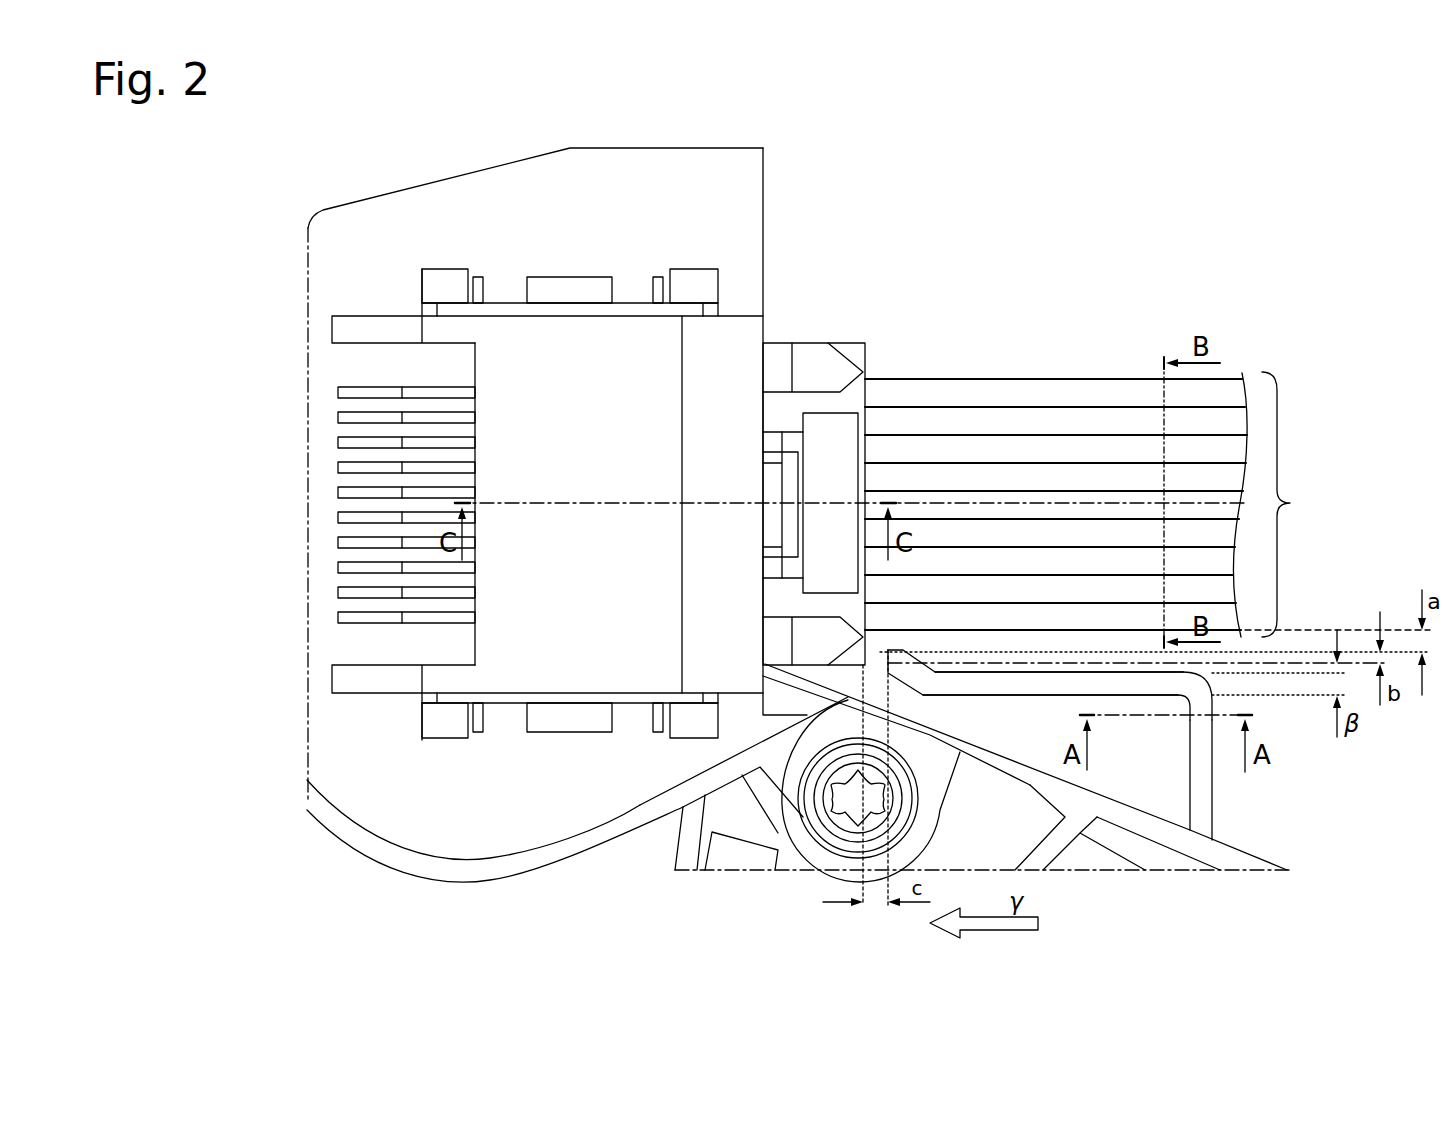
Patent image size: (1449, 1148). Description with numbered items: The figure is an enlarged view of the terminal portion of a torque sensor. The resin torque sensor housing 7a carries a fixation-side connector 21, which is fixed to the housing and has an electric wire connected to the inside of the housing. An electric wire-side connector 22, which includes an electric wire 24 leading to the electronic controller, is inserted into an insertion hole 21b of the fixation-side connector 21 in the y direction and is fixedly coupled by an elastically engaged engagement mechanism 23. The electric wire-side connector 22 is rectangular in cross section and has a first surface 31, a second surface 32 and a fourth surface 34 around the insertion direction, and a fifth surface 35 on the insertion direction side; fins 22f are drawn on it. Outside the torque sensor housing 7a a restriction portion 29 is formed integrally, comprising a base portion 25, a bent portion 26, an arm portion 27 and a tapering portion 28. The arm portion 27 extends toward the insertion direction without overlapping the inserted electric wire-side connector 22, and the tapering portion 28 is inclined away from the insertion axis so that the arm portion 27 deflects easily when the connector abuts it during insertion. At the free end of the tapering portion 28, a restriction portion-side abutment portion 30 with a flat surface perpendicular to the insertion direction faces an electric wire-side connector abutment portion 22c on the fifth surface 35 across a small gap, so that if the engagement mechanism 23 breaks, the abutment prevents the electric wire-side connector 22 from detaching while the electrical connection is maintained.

The fixation-side connector 21 is at (710, 323).
The insertion hole 21b is at (767, 355).
The electric wire-side connector 22 is at (818, 530).
The electric wire-side connector abutment portion 22c is at (870, 646).
The heat radiating fins 22f is at (424, 447).
The engagement mechanism 23 is at (795, 464).
The electric wire 24 is at (1097, 504).
The base portion 25 is at (1202, 772).
The bent portion 26 is at (1205, 697).
The arm portion 27 is at (1008, 688).
The tapering portion 28 is at (910, 648).
The restriction portion 29 is at (1044, 706).
The restriction portion-side abutment portion 30 is at (874, 656).
The first surface 31 is at (766, 422).
The second surface 32 is at (816, 678).
The fourth surface 34 is at (780, 332).
The fifth surface 35 is at (872, 444).
The torque sensor housing 7a is at (377, 848).